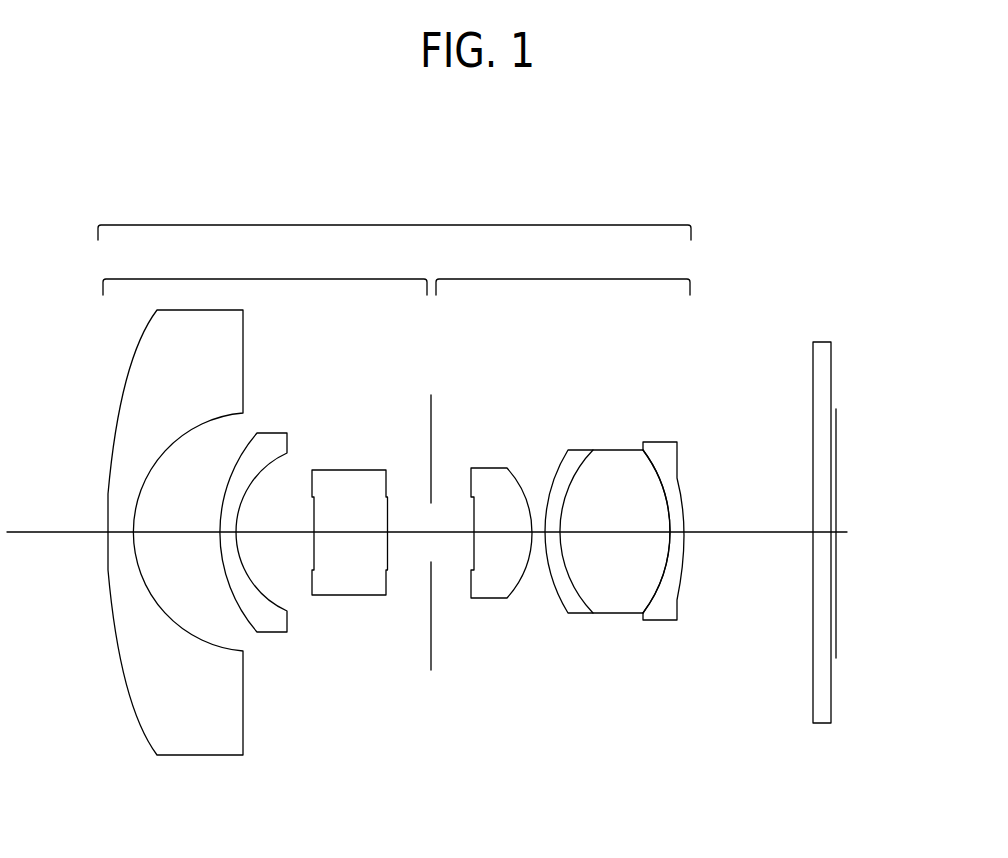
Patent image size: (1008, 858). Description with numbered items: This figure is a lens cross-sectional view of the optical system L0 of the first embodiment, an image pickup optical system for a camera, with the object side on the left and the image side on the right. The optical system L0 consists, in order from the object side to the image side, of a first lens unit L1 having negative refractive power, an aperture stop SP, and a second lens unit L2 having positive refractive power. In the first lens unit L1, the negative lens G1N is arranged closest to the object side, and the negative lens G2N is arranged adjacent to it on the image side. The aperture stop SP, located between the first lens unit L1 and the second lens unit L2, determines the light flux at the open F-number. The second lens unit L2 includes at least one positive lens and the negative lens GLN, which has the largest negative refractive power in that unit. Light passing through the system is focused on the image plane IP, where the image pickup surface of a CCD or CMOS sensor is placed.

The optical system L0 is at (394, 215).
The first lens unit L1 is at (265, 269).
The second lens unit L2 is at (563, 269).
The negative lens G1N is at (173, 756).
The negative lens G2N is at (262, 635).
The aperture stop SP is at (428, 657).
The negative lens GLN is at (657, 450).
The image plane IP is at (840, 565).